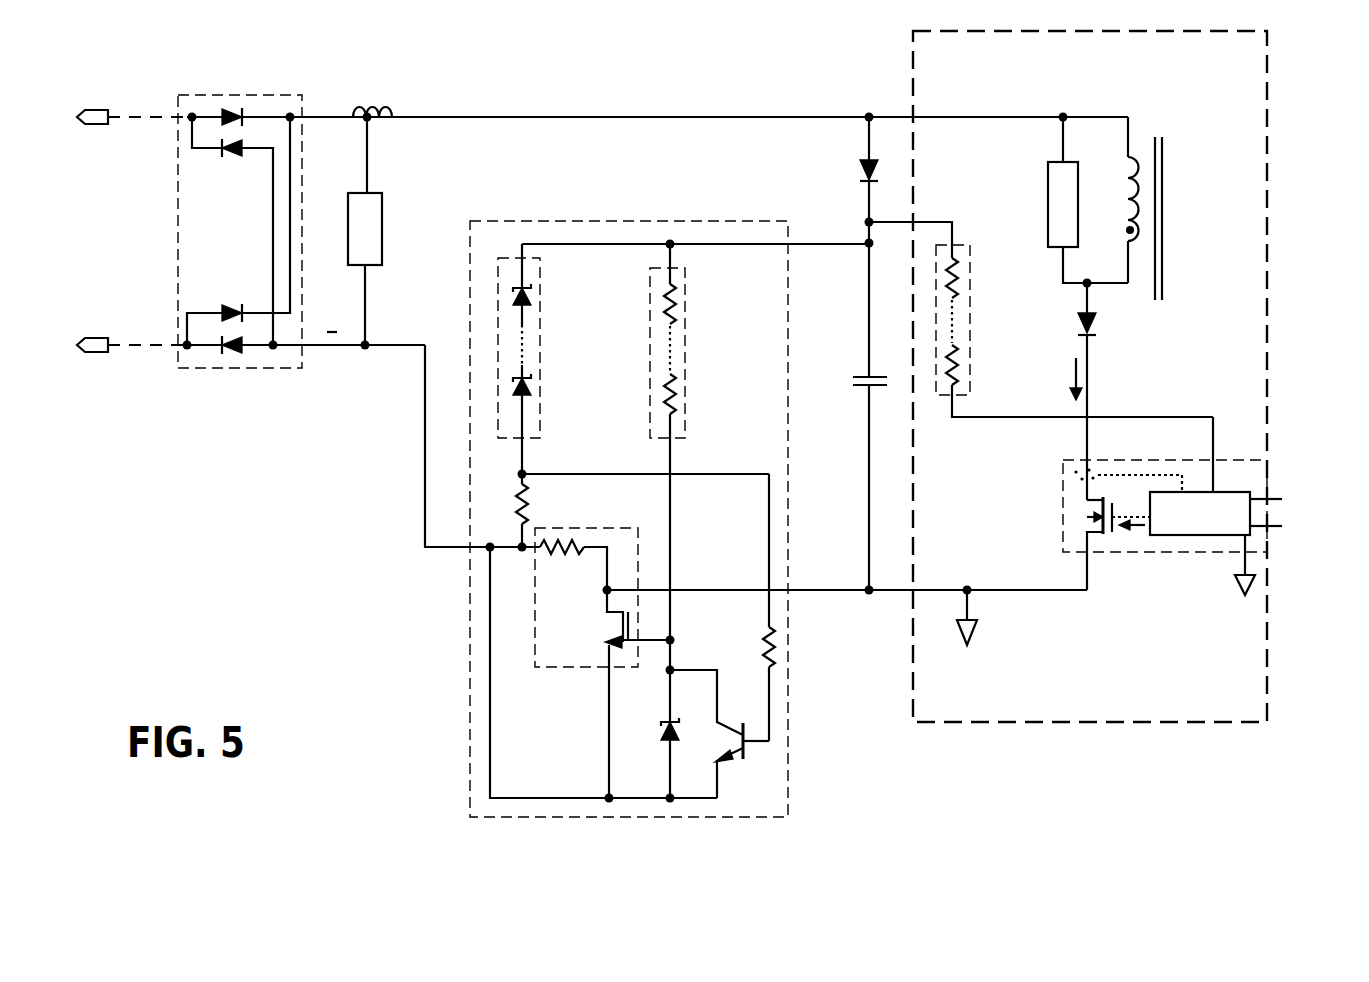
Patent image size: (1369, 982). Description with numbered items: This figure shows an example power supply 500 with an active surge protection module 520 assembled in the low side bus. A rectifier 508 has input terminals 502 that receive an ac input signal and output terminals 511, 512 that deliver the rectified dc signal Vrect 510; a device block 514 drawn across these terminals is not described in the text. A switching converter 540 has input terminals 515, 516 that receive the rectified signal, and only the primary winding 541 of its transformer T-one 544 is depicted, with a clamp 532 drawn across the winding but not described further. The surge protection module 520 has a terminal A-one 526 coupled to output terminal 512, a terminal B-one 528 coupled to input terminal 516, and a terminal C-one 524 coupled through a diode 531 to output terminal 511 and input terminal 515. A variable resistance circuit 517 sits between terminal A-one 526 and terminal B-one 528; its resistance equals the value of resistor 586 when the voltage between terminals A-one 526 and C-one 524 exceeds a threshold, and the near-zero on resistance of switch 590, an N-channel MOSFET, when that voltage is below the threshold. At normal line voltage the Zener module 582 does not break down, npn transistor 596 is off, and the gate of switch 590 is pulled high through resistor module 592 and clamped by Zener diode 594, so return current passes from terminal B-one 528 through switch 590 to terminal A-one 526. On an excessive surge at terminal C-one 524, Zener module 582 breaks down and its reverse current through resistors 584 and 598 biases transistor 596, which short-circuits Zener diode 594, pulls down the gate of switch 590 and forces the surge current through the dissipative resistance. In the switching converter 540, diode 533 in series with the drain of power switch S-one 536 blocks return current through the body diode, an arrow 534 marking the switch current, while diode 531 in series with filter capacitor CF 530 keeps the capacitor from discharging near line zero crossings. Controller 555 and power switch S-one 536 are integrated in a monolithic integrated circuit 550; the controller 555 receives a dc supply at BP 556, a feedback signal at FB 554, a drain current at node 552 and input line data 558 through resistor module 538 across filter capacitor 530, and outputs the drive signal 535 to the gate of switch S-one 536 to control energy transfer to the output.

The power supply 500 is at (148, 40).
The input terminals 502 is at (100, 132).
The rectifier 508 is at (203, 93).
The rectified dc signal Vrect 510 is at (335, 142).
The output terminal 511 is at (322, 113).
The output terminal 512 is at (317, 350).
The surge protection device 514 is at (393, 230).
The input terminal 515 is at (952, 112).
The input terminal 516 is at (1005, 595).
The variable resistance circuit 517 is at (575, 673).
The surge protection module 520 is at (462, 688).
The terminal C1 524 is at (822, 218).
The terminal A1 526 is at (432, 568).
The terminal B1 528 is at (823, 613).
The filter capacitor CF 530 is at (860, 367).
The diode 531 is at (853, 158).
The clamp circuit 532 is at (1050, 153).
The diode 533 is at (1072, 325).
The switch current 534 is at (1063, 378).
The drive signal 535 is at (1135, 532).
The power switch S1 536 is at (1078, 522).
The resistor module 538 is at (975, 275).
The switching converter 540 is at (1029, 715).
The primary winding 541 is at (1127, 190).
The transformer T1 544 is at (1155, 128).
The monolithic integrated circuit 550 is at (1142, 558).
The node 552 is at (1100, 463).
The FB 554 is at (1277, 490).
The controller 555 is at (1175, 537).
The BP 556 is at (1275, 533).
The input line data 558 is at (1218, 438).
The Zener module 582 is at (548, 348).
The resistor 584 is at (532, 508).
The resistor 586 is at (572, 528).
The switch 590 is at (608, 620).
The resistor module 592 is at (693, 357).
The Zener diode 594 is at (658, 713).
The npn transistor 596 is at (750, 748).
The resistor 598 is at (778, 648).